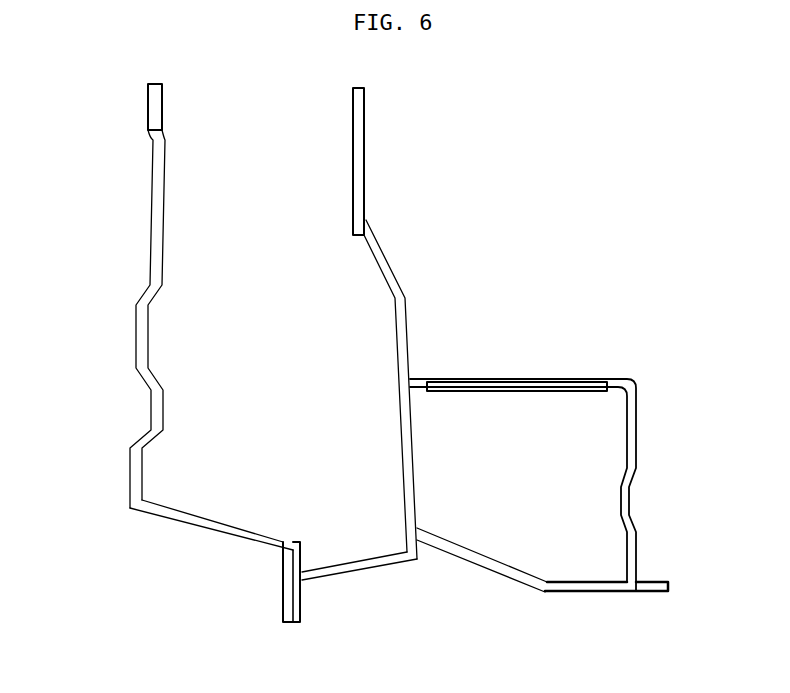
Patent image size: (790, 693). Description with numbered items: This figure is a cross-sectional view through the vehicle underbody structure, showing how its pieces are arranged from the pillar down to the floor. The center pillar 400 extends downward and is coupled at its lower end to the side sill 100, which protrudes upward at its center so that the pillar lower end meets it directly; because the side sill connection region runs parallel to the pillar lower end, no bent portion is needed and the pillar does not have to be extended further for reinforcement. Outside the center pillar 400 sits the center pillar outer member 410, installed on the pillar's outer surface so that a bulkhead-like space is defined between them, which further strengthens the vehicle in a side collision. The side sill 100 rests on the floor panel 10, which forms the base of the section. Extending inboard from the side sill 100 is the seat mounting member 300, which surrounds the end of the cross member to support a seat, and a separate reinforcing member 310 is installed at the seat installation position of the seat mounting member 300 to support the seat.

The floor panel 10 is at (572, 592).
The side sill 100 is at (385, 268).
The seat mounting member 300 is at (580, 378).
The reinforcing member 310 is at (563, 392).
The center pillar 400 is at (358, 142).
The center pillar outer member 410 is at (151, 173).